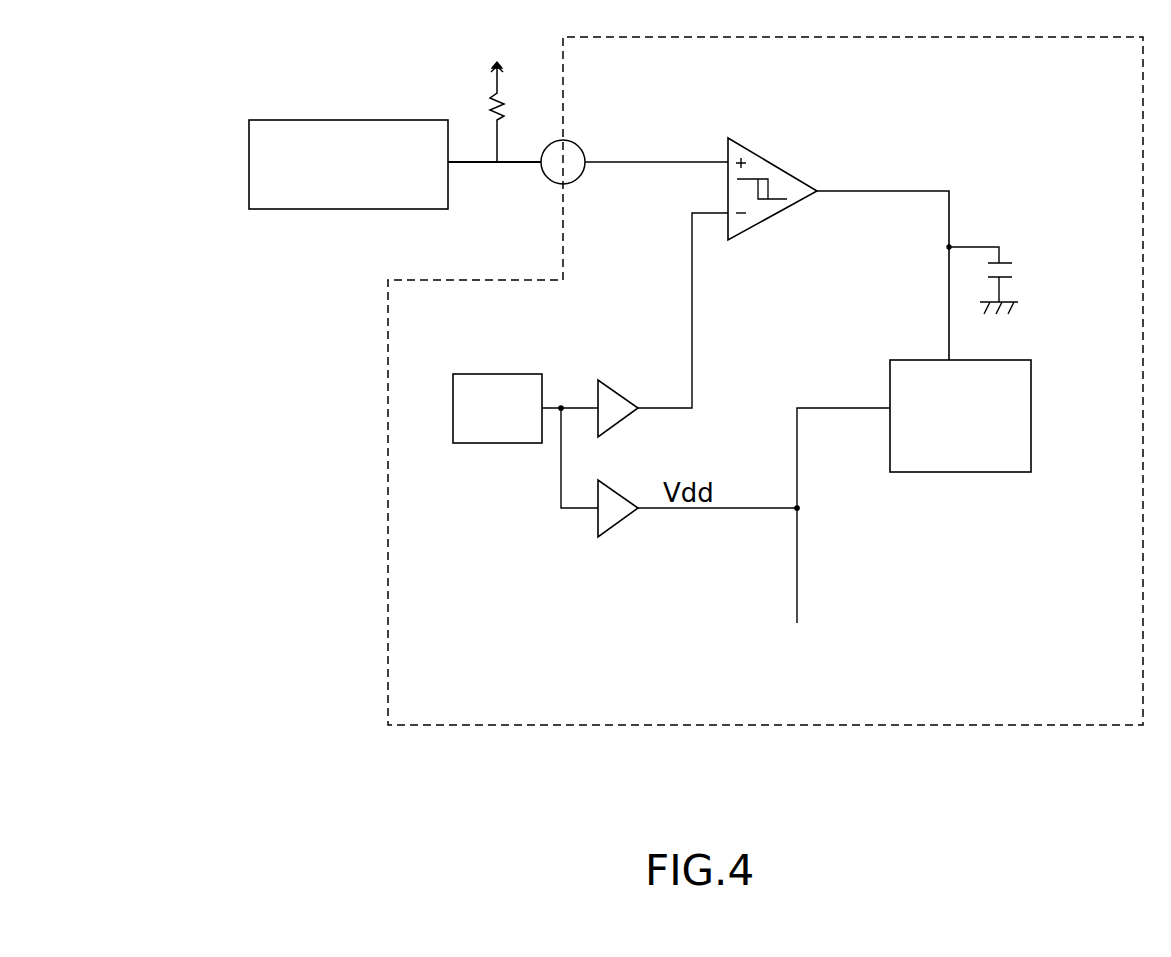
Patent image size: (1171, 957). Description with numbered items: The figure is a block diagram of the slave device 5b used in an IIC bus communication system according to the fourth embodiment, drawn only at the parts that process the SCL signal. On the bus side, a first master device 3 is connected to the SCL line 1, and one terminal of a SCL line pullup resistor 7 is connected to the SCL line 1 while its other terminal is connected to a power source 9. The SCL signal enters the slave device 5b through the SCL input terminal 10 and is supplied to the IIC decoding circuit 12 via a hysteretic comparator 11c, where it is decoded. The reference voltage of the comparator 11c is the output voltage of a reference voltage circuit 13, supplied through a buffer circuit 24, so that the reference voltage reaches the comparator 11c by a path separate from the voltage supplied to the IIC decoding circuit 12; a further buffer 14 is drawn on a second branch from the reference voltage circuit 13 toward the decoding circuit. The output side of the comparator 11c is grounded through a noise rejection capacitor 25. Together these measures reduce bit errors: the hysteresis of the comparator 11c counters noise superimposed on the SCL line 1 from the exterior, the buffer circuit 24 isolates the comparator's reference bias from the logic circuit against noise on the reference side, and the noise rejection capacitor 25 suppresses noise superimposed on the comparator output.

The SCL line 1 is at (480, 164).
The first master device 3 is at (249, 145).
The slave device 5b is at (913, 727).
The SCL line pullup resistor 7 is at (488, 97).
The power source 9 is at (497, 62).
The SCL input terminal 10 is at (545, 172).
The hysteretic comparator 11c is at (773, 217).
The IIC decoding circuit 12 is at (995, 472).
The reference voltage circuit 13 is at (480, 443).
The buffer 14 is at (620, 522).
The buffer circuit 24 is at (598, 388).
The noise rejection capacitor 25 is at (1007, 248).